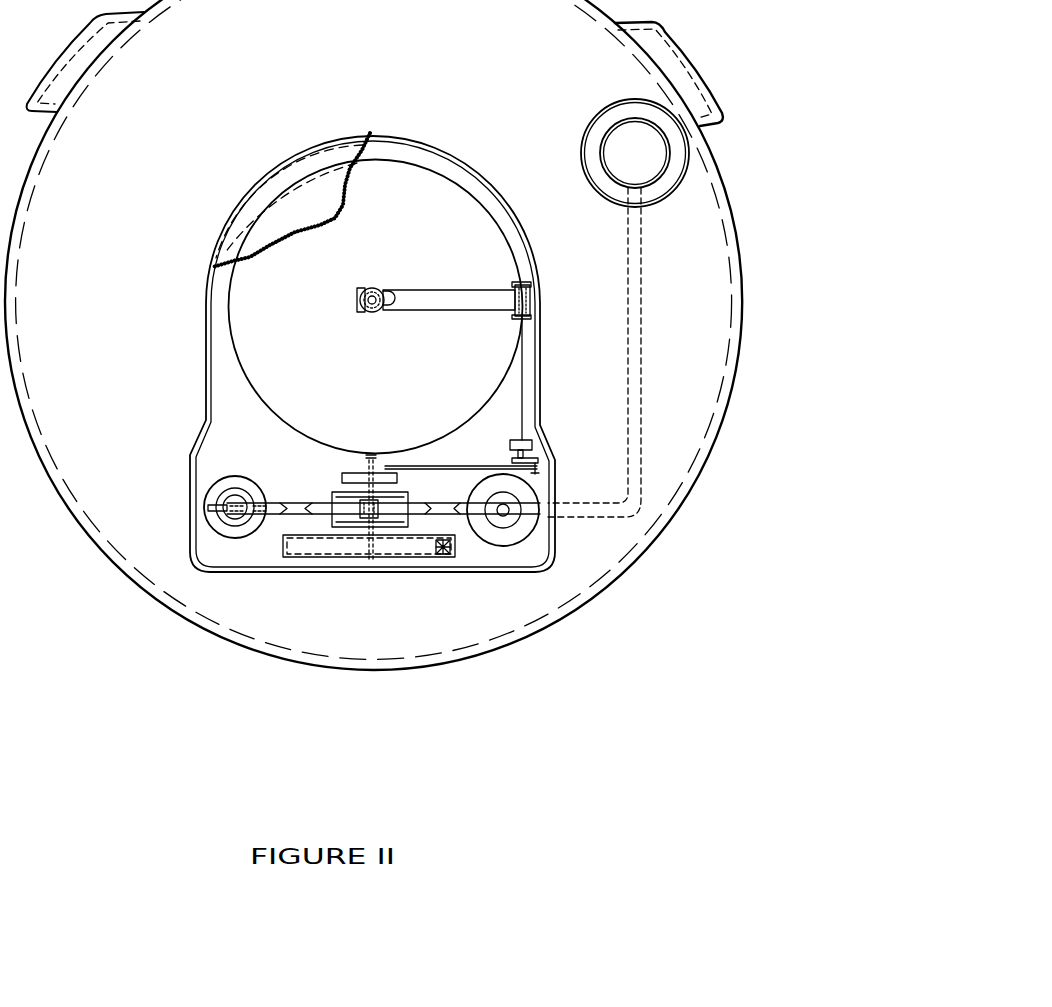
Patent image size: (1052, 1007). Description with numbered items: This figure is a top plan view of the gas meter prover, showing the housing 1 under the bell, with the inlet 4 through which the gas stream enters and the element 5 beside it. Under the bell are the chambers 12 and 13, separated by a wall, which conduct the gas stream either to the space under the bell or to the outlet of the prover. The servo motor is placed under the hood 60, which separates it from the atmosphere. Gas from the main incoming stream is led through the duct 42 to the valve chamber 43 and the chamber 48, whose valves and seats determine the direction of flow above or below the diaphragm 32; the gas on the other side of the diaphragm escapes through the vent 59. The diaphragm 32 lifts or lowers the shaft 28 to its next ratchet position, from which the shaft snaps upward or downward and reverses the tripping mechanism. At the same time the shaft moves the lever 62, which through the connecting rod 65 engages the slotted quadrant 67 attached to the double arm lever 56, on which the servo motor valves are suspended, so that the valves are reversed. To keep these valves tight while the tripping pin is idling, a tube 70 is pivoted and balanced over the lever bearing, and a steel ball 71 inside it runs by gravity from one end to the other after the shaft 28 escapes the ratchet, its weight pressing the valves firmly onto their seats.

The housing 1 is at (688, 492).
The inlet 4 is at (668, 150).
The tube fitting 5 is at (683, 183).
The chamber 12 is at (679, 45).
The chamber 13 is at (55, 62).
The shaft 28 is at (370, 292).
The diaphragm 32 is at (275, 390).
The duct 42 is at (641, 358).
The valve chamber 43 is at (537, 490).
The chamber 48 is at (237, 475).
The double arm lever 56 is at (298, 502).
The vent 59 is at (205, 508).
The hood 60 is at (447, 150).
The lever 62 is at (446, 290).
The connecting rod 65 is at (476, 446).
The slotted quadrant 67 is at (358, 472).
The tube 70 is at (417, 548).
The steel ball 71 is at (447, 555).